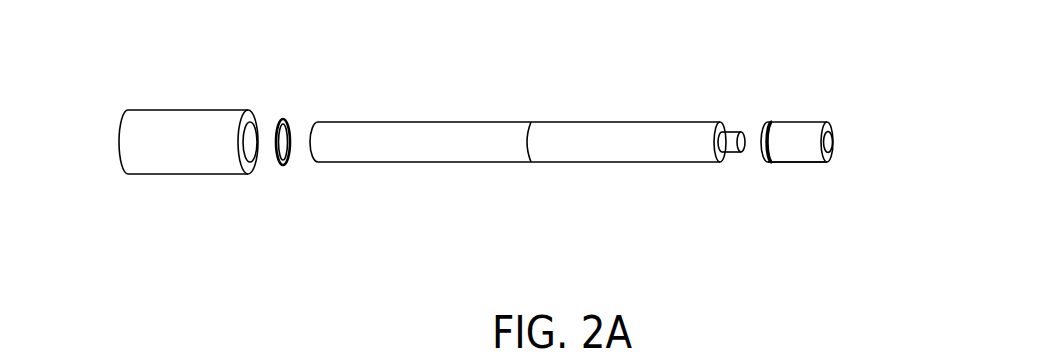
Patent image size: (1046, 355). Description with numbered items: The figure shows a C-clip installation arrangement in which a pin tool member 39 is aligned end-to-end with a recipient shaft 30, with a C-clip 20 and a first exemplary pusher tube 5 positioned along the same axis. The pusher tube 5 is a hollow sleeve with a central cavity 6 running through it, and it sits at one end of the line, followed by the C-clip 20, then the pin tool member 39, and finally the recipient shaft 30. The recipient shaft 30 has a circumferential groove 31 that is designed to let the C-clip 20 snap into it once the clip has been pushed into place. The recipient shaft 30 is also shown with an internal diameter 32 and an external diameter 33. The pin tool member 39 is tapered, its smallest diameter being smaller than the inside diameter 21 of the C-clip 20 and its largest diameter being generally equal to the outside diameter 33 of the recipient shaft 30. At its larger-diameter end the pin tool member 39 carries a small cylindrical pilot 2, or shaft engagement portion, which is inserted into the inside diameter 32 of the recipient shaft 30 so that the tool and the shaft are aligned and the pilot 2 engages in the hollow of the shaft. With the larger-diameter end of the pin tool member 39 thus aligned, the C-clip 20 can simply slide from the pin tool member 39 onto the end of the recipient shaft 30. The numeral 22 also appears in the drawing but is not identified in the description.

The pilot 2 is at (624, 201).
The pusher tube 5 is at (151, 192).
The central cavity 6 is at (216, 98).
The C-clip 20 is at (243, 192).
The inside diameter 21 is at (337, 198).
The assembly 22 is at (373, 342).
The recipient shaft 30 is at (750, 196).
The circumferential groove 31 is at (794, 88).
The internal diameter 32 is at (875, 93).
The external diameter 33 is at (831, 205).
The pin tool member 39 is at (518, 88).